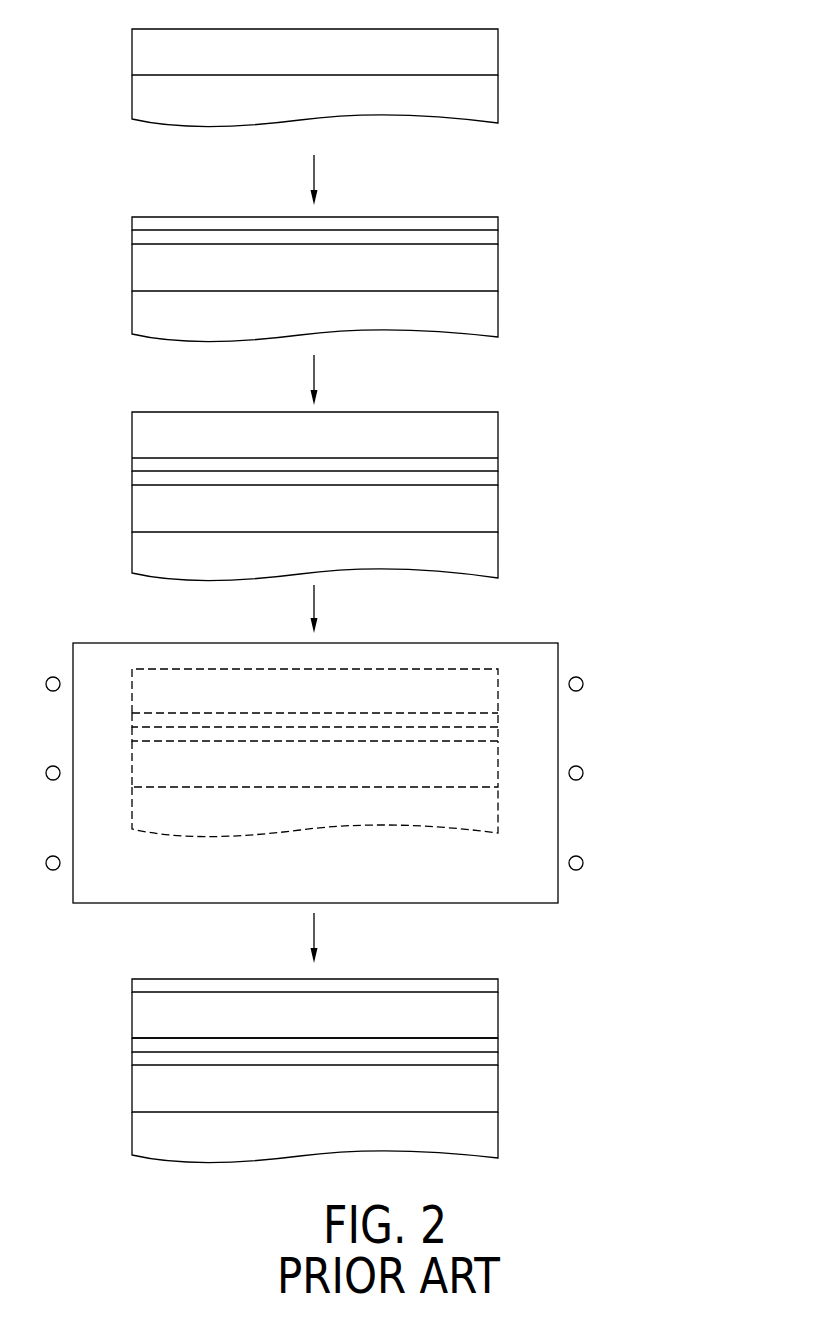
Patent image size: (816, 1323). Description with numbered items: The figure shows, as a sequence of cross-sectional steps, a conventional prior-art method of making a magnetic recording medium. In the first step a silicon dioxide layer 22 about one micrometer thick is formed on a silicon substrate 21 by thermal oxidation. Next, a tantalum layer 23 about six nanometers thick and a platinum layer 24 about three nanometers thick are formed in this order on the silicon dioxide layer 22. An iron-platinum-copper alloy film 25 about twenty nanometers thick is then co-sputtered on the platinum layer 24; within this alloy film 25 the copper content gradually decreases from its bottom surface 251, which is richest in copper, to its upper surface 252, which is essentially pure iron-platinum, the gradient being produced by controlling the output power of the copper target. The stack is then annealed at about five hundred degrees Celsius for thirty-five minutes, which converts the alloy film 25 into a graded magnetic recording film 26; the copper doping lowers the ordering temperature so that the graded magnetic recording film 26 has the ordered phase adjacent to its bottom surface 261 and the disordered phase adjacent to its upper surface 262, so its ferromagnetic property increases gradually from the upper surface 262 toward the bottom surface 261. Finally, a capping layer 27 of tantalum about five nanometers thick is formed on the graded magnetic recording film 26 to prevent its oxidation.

The silicon substrate 21 is at (488, 105).
The SiO2 layer 22 is at (488, 57).
The Ta layer 23 is at (492, 241).
The Pt layer 24 is at (488, 222).
The (Fe53Pt47)100-xCux alloy film 25 is at (442, 535).
The bottom surface 251 is at (432, 458).
The upper surface 252 is at (435, 412).
The graded magnetic recording film 26 is at (400, 1006).
The bottom surface 261 is at (462, 1038).
The upper surface 262 is at (465, 992).
The capping layer 27 is at (467, 985).